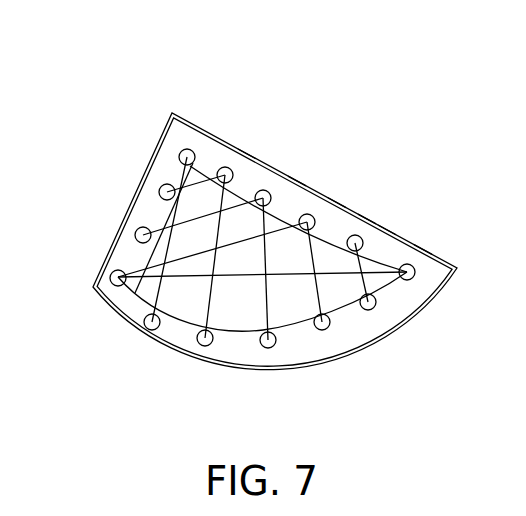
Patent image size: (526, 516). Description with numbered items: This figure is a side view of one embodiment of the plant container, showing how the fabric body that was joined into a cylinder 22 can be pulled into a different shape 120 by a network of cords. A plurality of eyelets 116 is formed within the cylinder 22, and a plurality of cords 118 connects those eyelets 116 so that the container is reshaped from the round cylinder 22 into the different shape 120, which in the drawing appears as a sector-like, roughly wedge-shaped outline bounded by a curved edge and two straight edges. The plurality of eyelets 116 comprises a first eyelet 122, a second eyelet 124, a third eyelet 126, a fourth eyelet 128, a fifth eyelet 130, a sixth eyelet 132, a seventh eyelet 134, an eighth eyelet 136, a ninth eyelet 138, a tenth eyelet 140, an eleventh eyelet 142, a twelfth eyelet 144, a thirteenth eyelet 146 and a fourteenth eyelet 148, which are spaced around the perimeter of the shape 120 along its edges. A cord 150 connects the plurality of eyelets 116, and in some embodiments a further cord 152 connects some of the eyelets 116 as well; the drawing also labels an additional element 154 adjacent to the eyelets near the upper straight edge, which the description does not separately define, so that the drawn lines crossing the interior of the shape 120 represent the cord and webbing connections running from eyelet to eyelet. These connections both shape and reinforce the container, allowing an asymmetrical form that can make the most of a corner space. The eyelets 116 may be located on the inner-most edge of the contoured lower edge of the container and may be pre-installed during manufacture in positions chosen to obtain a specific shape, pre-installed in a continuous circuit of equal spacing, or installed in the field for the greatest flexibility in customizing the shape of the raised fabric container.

The plurality of eyelets 116 is at (320, 98).
The plurality of cords 118 is at (110, 182).
The different shape 120 is at (303, 342).
The first eyelet 122 is at (197, 133).
The second eyelet 124 is at (250, 154).
The third eyelet 126 is at (300, 182).
The fourth eyelet 128 is at (340, 203).
The fifth eyelet 130 is at (370, 222).
The cylinder 22 is at (389, 231).
The sixth eyelet 132 is at (441, 256).
The seventh eyelet 134 is at (376, 304).
The eighth eyelet 136 is at (329, 328).
The ninth eyelet 138 is at (271, 348).
The tenth eyelet 140 is at (201, 346).
The eleventh eyelet 142 is at (146, 330).
The twelfth eyelet 144 is at (110, 280).
The thirteenth eyelet 146 is at (135, 232).
The fourteenth eyelet 148 is at (160, 186).
The cord 150 is at (423, 252).
The cord 152 is at (229, 168).
The aperture 154 is at (269, 193).